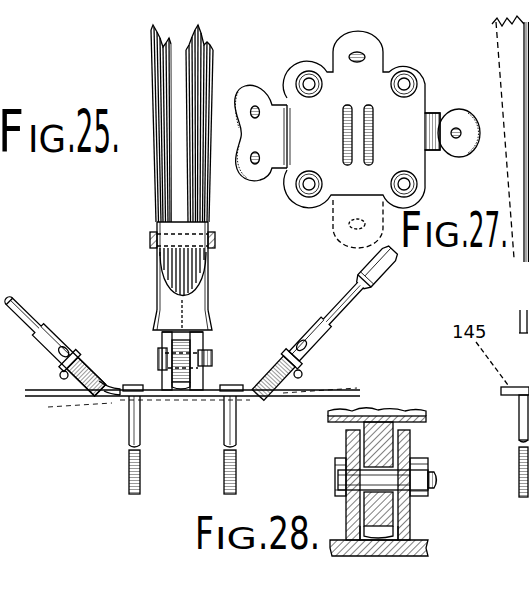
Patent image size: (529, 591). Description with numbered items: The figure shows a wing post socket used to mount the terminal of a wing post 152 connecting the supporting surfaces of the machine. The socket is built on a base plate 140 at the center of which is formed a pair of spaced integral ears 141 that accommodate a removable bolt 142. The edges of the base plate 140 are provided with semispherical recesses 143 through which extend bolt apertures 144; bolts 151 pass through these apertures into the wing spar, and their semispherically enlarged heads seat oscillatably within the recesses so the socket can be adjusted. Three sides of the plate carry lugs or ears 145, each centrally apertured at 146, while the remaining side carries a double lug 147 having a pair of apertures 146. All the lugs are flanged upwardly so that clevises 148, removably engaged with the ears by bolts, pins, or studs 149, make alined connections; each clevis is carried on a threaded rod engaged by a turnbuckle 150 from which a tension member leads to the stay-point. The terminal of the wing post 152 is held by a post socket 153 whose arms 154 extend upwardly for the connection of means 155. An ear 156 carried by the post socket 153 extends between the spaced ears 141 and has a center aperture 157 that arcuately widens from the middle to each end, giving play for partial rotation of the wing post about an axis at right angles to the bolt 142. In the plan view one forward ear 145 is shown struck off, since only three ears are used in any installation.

In FIG. 25, the base plate 140 is at (203, 397).
In FIG. 27, the base plate 140 is at (424, 93).
In FIG. 28, the base plate 140 is at (410, 553).
In FIG. 25, the spaced integral ears 141 is at (203, 345).
In FIG. 28, the spaced integral ears 141 is at (410, 524).
In FIG. 25, the removable bolt 142 is at (213, 356).
In FIG. 28, the removable bolt 142 is at (398, 478).
In FIG. 25, the semispherical recesses 143 is at (247, 400).
In FIG. 27, the semispherical recesses 143 is at (308, 71).
In FIG. 27, the bolt apertures 144 is at (408, 77).
In FIG. 25, the lugs or ears 145 is at (82, 384).
In FIG. 27, the lugs or ears 145 is at (357, 45).
In FIG. 27, the apertures 146 is at (254, 165).
In FIG. 25, the double lug 147 is at (70, 354).
In FIG. 27, the double lug 147 is at (266, 108).
In FIG. 25, the clevises 148 is at (62, 332).
In FIG. 25, the bolts, pins, or studs 149 is at (60, 376).
In FIG. 25, the turnbuckle 150 is at (383, 273).
In FIG. 25, the bolts 151 is at (141, 465).
In FIG. 25, the wing post 152 is at (160, 75).
In FIG. 25, the post socket 153 is at (186, 316).
In FIG. 25, the arms 154 is at (211, 264).
In FIG. 25, the connecting means 155 is at (215, 240).
In FIG. 25, the ear 156 is at (182, 343).
In FIG. 28, the ear 156 is at (378, 526).
In FIG. 28, the center aperture 157 is at (385, 440).